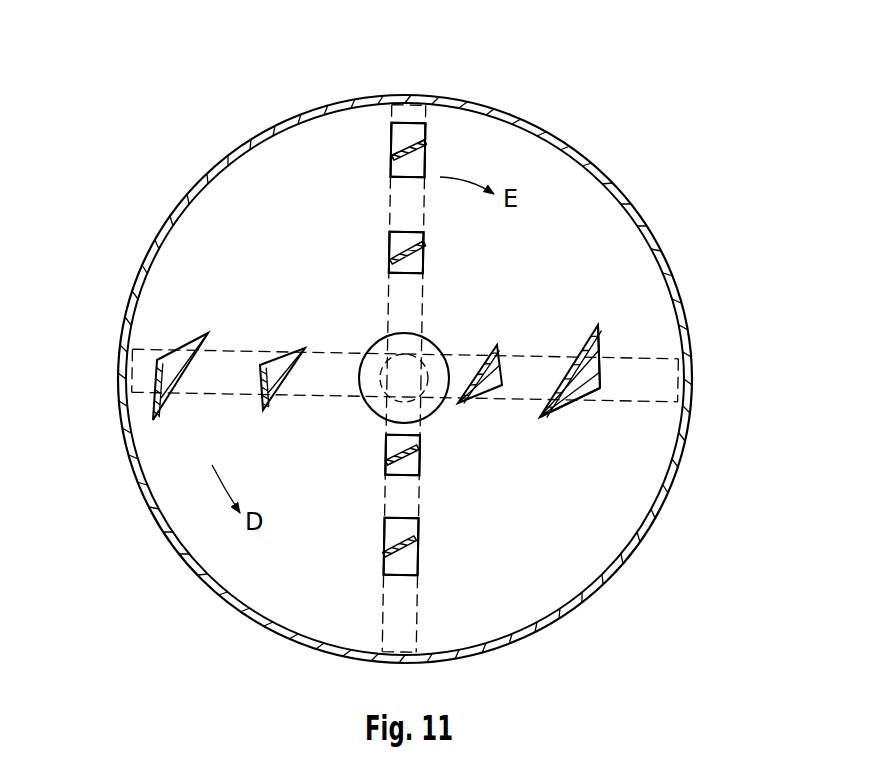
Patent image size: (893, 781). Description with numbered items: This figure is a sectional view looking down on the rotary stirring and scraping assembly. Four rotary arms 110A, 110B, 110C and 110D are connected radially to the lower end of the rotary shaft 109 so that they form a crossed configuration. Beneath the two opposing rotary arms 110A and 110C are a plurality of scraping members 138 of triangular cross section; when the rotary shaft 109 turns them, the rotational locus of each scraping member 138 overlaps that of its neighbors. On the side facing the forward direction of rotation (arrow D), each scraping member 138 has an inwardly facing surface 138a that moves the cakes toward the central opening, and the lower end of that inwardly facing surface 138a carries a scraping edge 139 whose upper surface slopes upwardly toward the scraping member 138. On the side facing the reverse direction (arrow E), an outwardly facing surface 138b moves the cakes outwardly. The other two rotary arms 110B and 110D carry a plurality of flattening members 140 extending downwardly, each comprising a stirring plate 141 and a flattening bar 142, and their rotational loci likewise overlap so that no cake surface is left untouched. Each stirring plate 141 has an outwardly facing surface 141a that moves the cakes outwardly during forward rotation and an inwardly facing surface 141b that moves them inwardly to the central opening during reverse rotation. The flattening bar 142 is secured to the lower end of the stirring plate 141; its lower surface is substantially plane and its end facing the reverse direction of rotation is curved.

The rotary shaft 109 is at (440, 403).
The rotary arm 110A is at (148, 347).
The rotary arm 110B is at (390, 117).
The rotary arm 110C is at (683, 358).
The rotary arm 110D is at (416, 630).
The scraping member 138 is at (180, 342).
The inwardly facing surface 138a is at (575, 347).
The outwardly facing surface 138b is at (572, 406).
The scraping edge 139 is at (176, 397).
The flattening member 140 is at (430, 165).
The stirring plate 141 is at (422, 136).
The outwardly facing surface 141a is at (395, 150).
The inwardly facing surface 141b is at (421, 143).
The flattening bar 142 is at (405, 128).